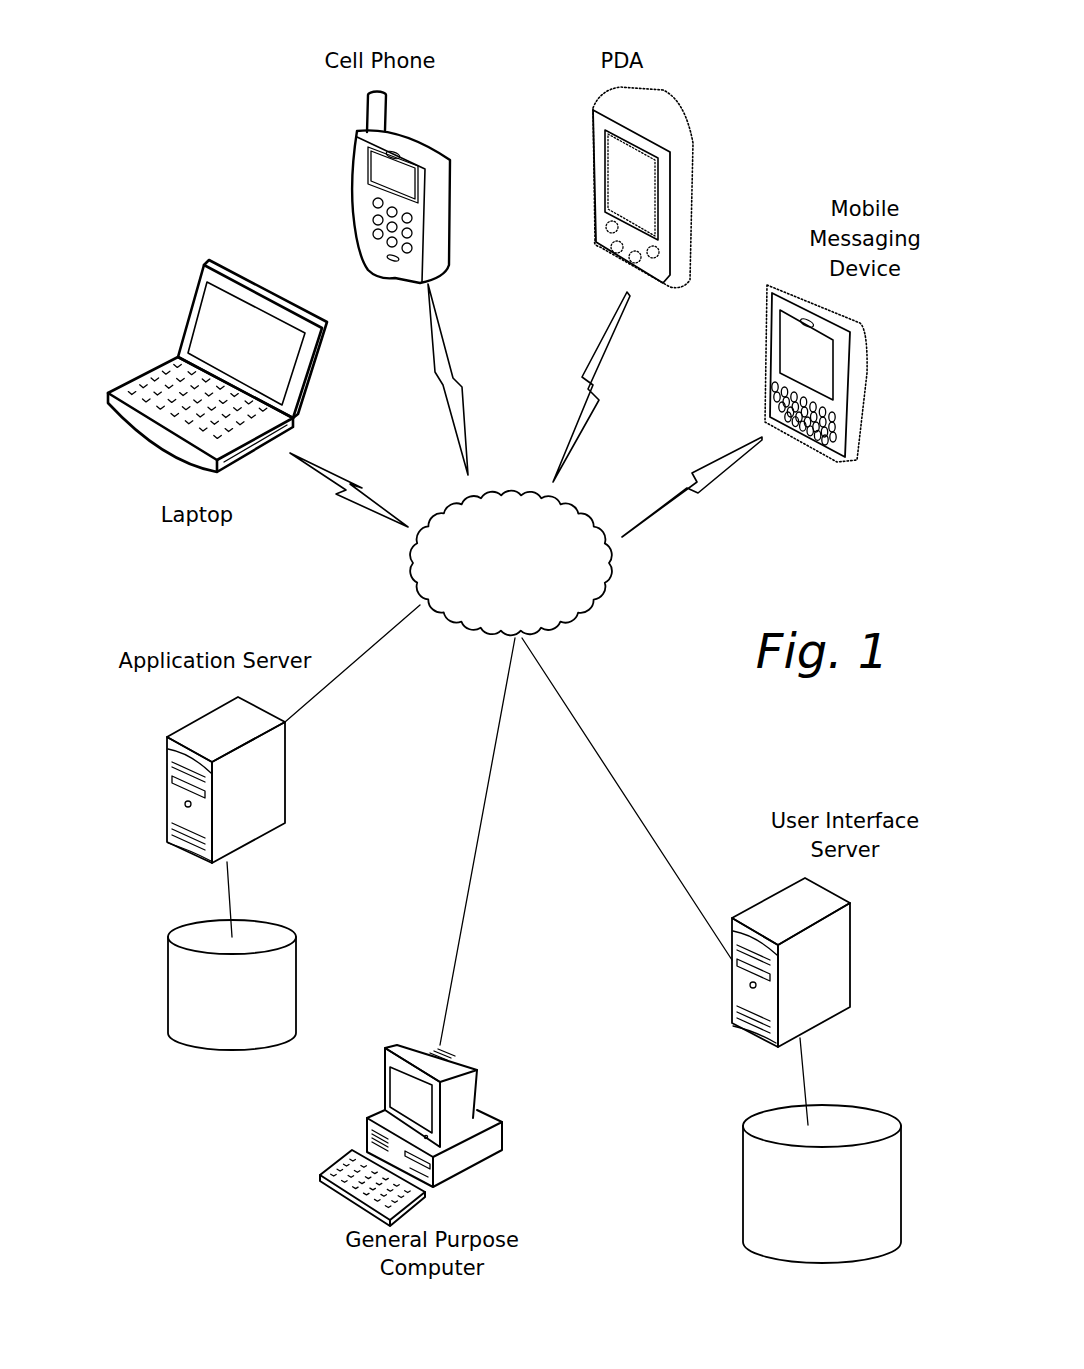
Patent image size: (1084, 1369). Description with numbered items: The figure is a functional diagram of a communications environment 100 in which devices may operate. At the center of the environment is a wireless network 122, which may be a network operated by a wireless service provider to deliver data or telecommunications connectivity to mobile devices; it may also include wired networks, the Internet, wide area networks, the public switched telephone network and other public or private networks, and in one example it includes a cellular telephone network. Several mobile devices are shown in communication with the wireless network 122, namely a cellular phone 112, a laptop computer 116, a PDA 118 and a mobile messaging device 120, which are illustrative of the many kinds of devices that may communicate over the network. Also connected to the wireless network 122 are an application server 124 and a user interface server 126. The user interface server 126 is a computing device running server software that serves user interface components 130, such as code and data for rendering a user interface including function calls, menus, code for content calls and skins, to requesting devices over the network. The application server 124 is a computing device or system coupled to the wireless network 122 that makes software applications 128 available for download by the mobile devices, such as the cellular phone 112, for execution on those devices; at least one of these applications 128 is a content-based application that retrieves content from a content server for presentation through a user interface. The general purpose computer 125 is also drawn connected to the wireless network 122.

The communications environment 100 is at (201, 96).
The cellular phone 112 is at (432, 142).
The laptop computer 116 is at (205, 266).
The PDA 118 is at (665, 130).
The mobile messaging device 120 is at (842, 460).
The wireless network 122 is at (493, 601).
The application server 124 is at (167, 790).
The general purpose computer 125 is at (492, 1115).
The user interface server 126 is at (758, 900).
The applications 128 is at (167, 983).
The user interface components 130 is at (743, 1182).